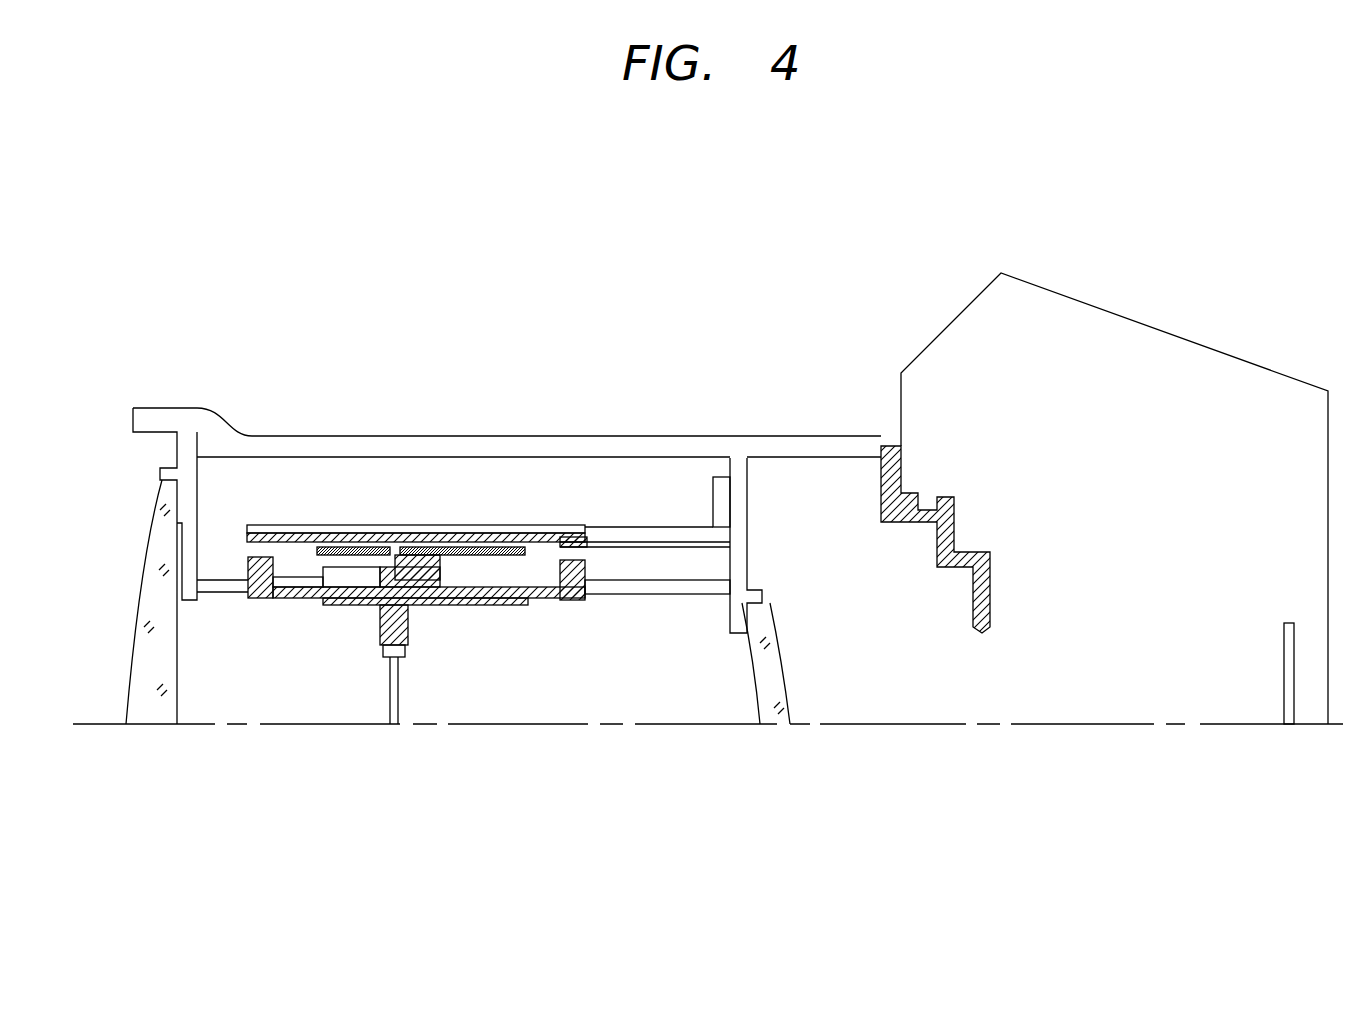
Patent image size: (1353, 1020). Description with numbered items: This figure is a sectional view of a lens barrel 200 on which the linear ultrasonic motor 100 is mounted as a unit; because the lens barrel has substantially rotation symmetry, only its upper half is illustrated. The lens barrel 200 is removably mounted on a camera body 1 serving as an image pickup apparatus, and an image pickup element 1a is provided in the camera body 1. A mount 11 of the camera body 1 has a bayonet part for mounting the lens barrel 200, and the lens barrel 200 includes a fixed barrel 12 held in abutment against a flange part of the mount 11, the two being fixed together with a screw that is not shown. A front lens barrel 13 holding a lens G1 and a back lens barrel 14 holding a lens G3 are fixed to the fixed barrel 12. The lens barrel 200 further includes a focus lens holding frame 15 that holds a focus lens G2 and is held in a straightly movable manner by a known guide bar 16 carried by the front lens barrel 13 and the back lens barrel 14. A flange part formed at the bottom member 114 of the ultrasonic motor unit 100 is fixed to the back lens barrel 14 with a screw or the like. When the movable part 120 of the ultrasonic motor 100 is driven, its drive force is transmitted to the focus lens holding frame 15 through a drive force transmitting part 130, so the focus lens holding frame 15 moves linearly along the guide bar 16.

The camera body 1 is at (970, 300).
The image pickup element 1a is at (1284, 683).
The mount 11 is at (897, 445).
The fixed barrel 12 is at (797, 437).
The front lens barrel 13 is at (177, 432).
The back lens barrel 14 is at (717, 475).
The focus lens holding frame 15 is at (390, 657).
The guide bar 16 is at (623, 583).
The linear ultrasonic motor 100 is at (478, 610).
The bottom member 114 is at (267, 560).
The movable part 120 is at (373, 548).
The drive force transmitting part 130 is at (422, 540).
The lens barrel 200 is at (540, 312).
The lens G1 is at (172, 602).
The focus lens G2 is at (420, 710).
The lens G3 is at (786, 663).